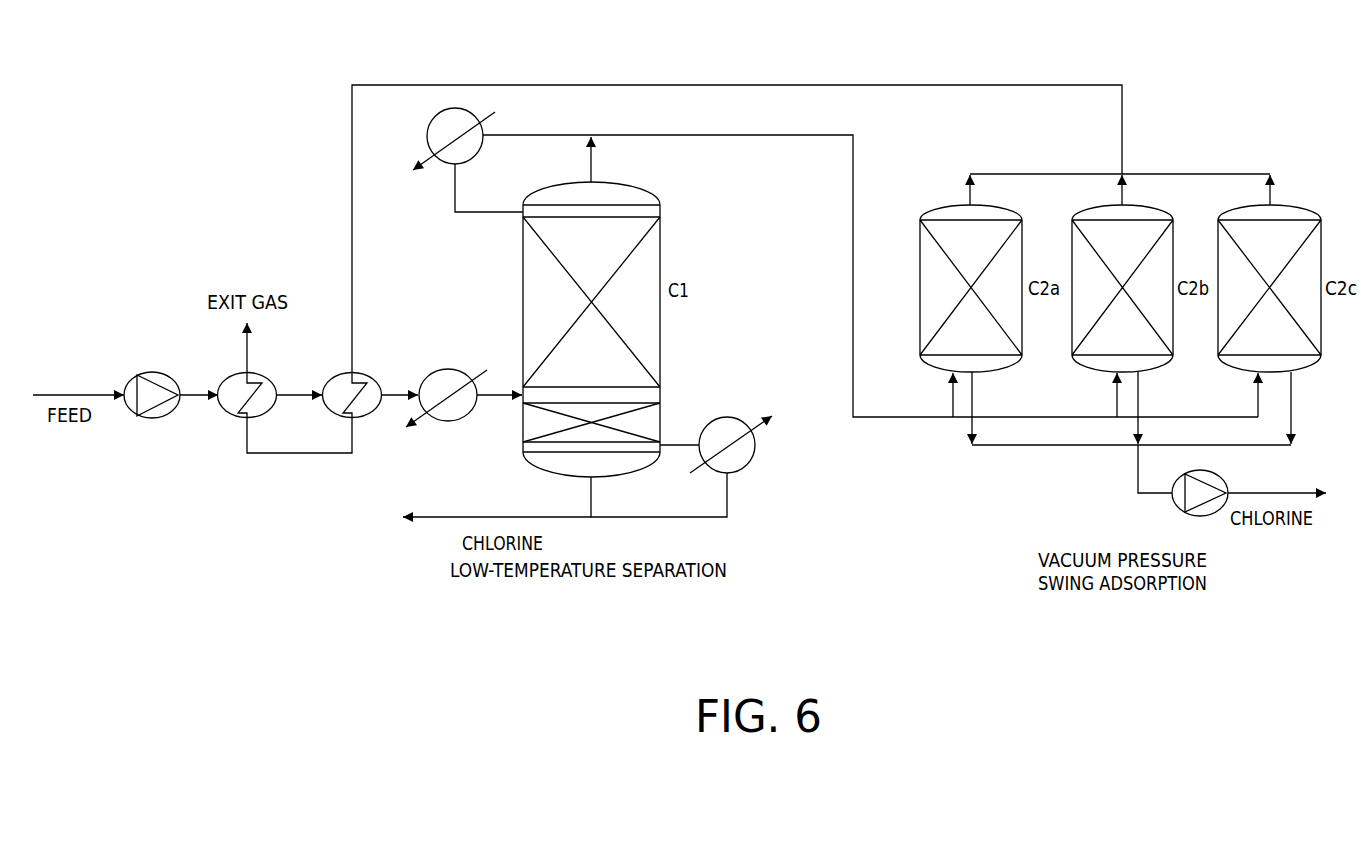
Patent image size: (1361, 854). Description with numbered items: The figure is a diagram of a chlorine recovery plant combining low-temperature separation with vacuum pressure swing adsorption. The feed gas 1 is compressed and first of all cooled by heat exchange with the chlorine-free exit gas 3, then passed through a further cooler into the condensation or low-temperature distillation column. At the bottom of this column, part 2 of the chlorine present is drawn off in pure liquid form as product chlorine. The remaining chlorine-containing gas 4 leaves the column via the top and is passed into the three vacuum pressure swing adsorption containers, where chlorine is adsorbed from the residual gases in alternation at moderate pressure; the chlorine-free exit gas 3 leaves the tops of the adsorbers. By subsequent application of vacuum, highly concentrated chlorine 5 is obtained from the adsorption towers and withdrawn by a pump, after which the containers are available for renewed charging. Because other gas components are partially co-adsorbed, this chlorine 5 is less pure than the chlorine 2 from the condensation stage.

The feed gas 1 is at (78, 382).
The chlorine drawn off at the bottom 2 is at (497, 504).
The chlorine-free exit gas 3 is at (743, 253).
The chlorine-containing gas 4 is at (870, 276).
The highly concentrated chlorine 5 is at (1277, 479).